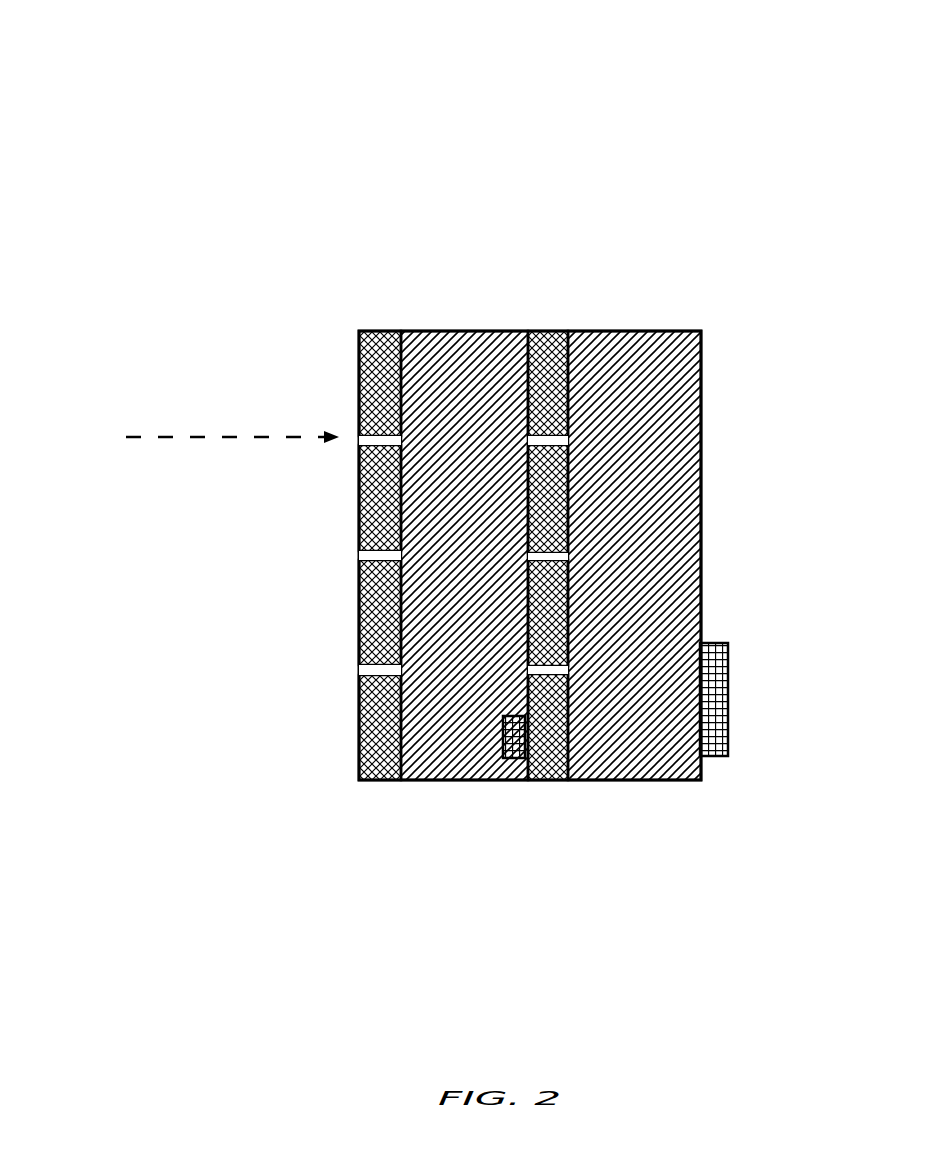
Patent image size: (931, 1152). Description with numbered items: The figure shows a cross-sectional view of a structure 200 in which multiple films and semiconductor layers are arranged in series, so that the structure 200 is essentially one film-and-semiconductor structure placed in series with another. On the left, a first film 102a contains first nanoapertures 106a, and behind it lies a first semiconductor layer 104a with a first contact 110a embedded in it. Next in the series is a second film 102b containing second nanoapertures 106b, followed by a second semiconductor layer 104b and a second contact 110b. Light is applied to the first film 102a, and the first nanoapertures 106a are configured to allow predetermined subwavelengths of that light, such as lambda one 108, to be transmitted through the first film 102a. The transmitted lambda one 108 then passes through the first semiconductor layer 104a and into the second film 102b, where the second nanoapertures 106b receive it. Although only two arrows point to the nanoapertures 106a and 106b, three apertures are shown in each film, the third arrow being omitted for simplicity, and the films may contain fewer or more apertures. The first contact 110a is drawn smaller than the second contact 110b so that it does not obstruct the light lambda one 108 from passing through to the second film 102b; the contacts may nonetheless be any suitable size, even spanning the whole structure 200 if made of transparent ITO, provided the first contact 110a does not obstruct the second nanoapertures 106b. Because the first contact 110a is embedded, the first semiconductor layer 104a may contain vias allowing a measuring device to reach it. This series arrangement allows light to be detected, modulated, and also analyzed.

The structure 200 is at (463, 86).
The first film 102a is at (340, 355).
The second film 102b is at (548, 772).
The first semiconductor layer 104a is at (448, 292).
The second semiconductor layer 104b is at (648, 323).
The first nanoapertures 106a is at (348, 545).
The second nanoapertures 106b is at (517, 548).
The lambda 1 108 is at (219, 417).
The first contact 110a is at (505, 750).
The second contact 110b is at (705, 748).